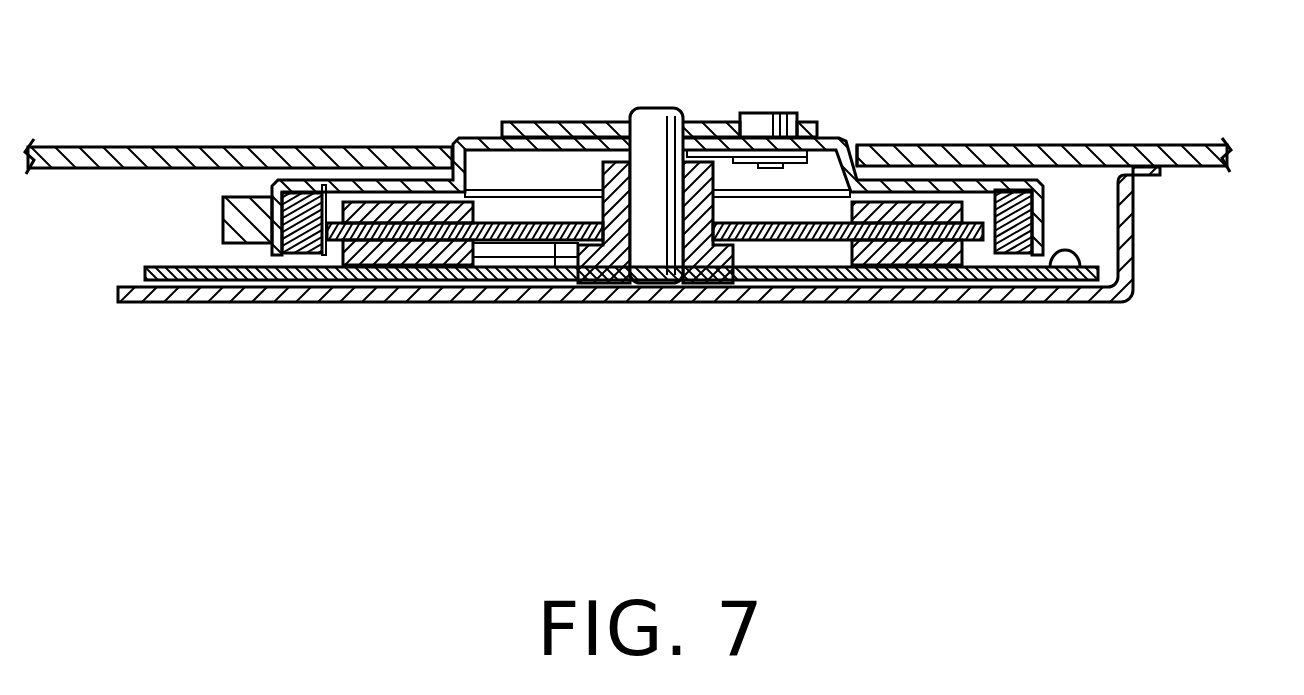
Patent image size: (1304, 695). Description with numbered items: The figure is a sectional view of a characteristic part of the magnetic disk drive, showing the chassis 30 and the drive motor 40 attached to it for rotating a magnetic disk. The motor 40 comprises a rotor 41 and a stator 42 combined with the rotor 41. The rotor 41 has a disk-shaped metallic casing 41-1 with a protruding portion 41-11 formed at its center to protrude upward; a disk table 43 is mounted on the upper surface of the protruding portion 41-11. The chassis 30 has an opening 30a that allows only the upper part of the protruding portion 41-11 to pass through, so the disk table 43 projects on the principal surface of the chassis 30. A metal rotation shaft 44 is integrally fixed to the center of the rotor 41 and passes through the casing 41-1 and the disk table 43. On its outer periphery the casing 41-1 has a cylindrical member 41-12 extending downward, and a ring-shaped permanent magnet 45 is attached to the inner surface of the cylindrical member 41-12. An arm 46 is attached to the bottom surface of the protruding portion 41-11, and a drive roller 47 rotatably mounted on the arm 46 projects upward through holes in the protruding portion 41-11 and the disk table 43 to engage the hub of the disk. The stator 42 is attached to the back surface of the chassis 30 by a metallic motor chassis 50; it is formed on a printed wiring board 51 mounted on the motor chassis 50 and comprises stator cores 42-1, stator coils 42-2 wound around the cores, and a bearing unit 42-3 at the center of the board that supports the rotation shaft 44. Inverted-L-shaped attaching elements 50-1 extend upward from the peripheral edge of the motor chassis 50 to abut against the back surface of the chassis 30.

The chassis 30 is at (997, 143).
The opening 30a is at (862, 143).
The drive motor 40 is at (513, 318).
The rotor 41 is at (259, 254).
The casing 41-1 is at (355, 179).
The protruding portion 41-11 is at (467, 137).
The cylindrical member 41-12 is at (1045, 199).
The stator 42 is at (555, 256).
The stator cores 42-1 is at (356, 250).
The stator coils 42-2 is at (408, 252).
The bearing unit 42-3 is at (610, 296).
The disk table 43 is at (546, 122).
The rotation shaft 44 is at (650, 135).
The permanent magnet 45 is at (278, 182).
The arm 46 is at (733, 194).
The drive roller 47 is at (767, 128).
The motor chassis 50 is at (924, 303).
The attaching elements 50-1 is at (1123, 238).
The printed wiring board 51 is at (1080, 258).